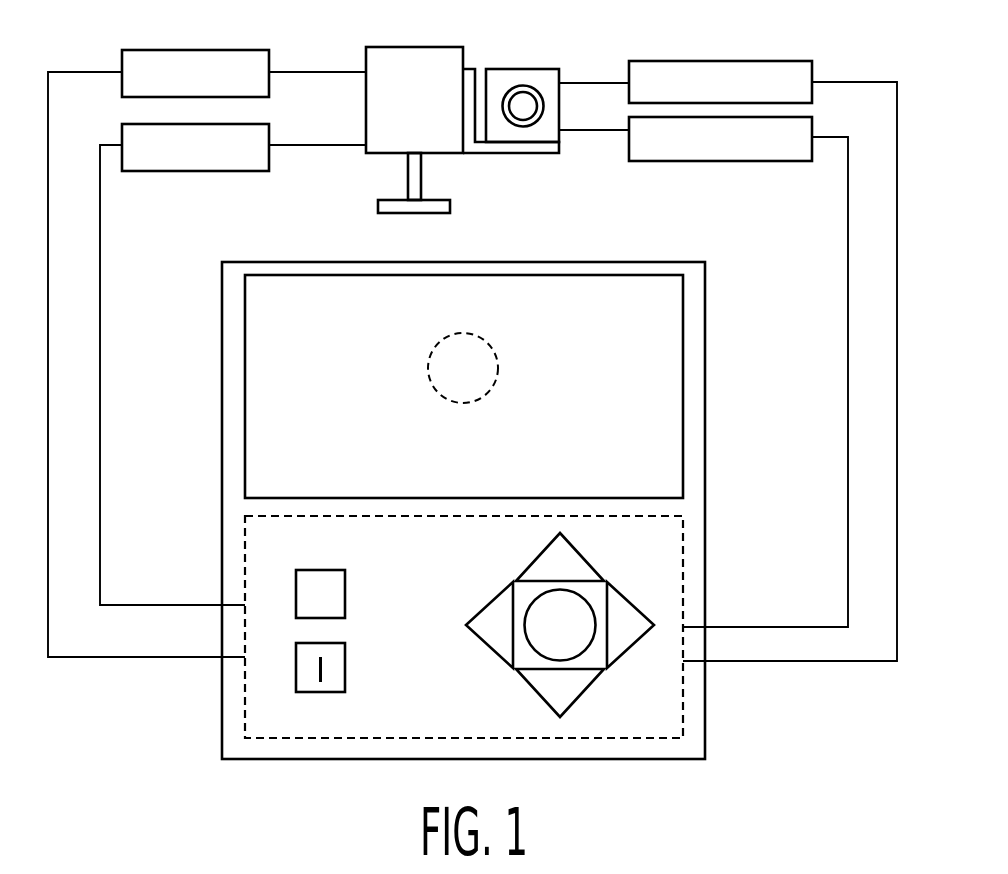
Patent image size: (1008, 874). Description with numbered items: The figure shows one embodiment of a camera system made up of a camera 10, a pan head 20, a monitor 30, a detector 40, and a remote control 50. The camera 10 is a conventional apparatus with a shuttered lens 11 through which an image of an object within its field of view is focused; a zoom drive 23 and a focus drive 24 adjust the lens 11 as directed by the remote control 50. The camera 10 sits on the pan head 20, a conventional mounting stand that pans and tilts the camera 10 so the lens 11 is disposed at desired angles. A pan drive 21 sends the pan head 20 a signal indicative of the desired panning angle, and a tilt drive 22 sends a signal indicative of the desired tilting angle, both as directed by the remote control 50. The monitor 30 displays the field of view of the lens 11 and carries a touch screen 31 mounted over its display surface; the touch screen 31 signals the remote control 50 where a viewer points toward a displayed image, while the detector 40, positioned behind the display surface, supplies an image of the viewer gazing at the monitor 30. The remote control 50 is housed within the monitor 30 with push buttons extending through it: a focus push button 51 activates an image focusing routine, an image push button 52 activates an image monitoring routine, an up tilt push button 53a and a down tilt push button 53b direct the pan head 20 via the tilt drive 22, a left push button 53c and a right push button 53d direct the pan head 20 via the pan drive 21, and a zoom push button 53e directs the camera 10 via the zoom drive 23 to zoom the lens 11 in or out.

The camera 10 is at (559, 72).
The shuttered lens 11 is at (521, 87).
The pan head 20 is at (366, 62).
The pan drive 21 is at (122, 63).
The tilt drive 22 is at (122, 137).
The zoom drive 23 is at (812, 67).
The focus drive 24 is at (768, 162).
The monitor 30 is at (475, 262).
The touch screen 31 is at (482, 490).
The detector 40 is at (500, 368).
The remote control 50 is at (684, 582).
The focus push button 51 is at (345, 590).
The image push button 52 is at (345, 665).
The up tilt push button 53a is at (533, 565).
The down tilt push button 53b is at (522, 677).
The left push button 53c is at (488, 603).
The right push button 53d is at (635, 603).
The zoom push button 53e is at (577, 651).